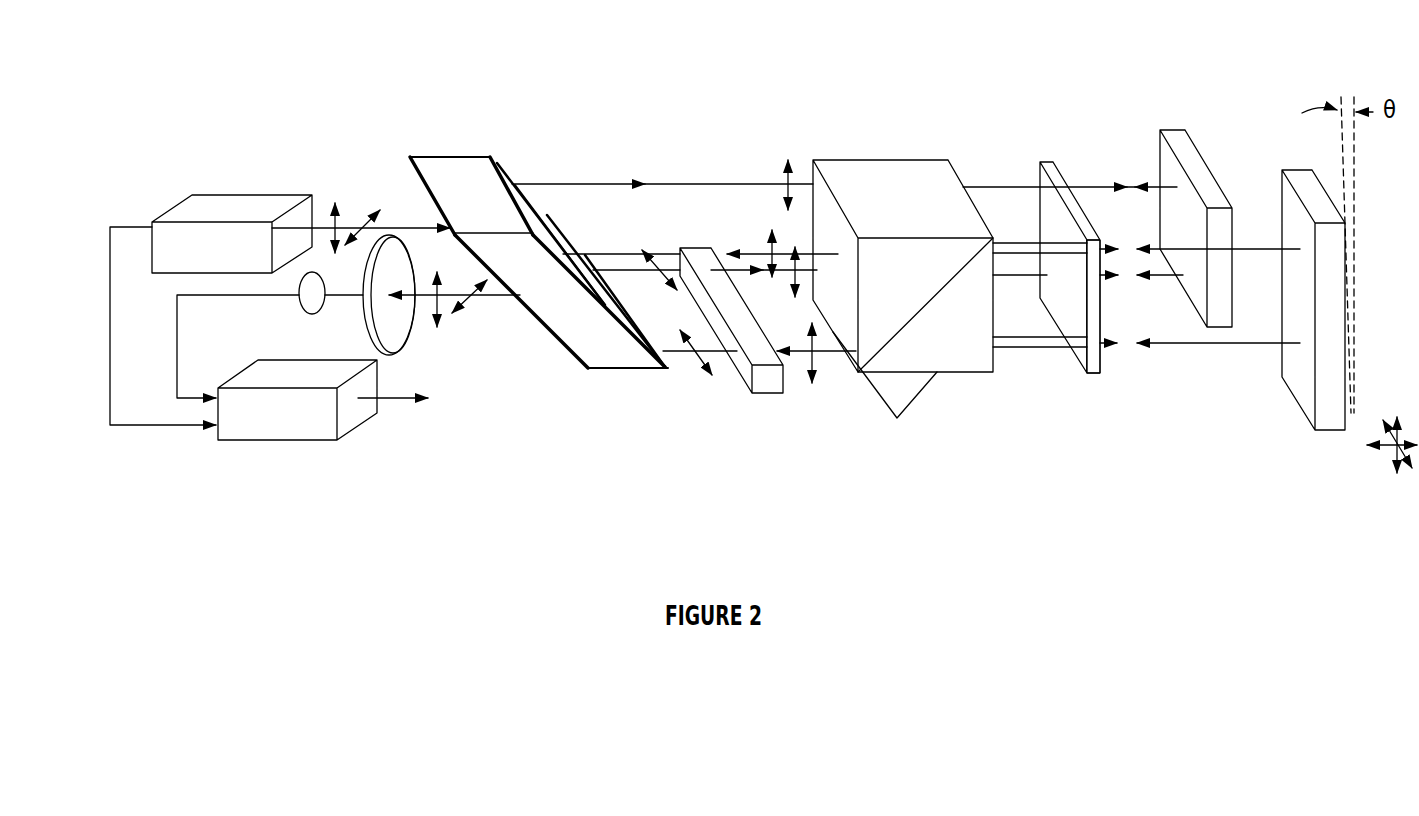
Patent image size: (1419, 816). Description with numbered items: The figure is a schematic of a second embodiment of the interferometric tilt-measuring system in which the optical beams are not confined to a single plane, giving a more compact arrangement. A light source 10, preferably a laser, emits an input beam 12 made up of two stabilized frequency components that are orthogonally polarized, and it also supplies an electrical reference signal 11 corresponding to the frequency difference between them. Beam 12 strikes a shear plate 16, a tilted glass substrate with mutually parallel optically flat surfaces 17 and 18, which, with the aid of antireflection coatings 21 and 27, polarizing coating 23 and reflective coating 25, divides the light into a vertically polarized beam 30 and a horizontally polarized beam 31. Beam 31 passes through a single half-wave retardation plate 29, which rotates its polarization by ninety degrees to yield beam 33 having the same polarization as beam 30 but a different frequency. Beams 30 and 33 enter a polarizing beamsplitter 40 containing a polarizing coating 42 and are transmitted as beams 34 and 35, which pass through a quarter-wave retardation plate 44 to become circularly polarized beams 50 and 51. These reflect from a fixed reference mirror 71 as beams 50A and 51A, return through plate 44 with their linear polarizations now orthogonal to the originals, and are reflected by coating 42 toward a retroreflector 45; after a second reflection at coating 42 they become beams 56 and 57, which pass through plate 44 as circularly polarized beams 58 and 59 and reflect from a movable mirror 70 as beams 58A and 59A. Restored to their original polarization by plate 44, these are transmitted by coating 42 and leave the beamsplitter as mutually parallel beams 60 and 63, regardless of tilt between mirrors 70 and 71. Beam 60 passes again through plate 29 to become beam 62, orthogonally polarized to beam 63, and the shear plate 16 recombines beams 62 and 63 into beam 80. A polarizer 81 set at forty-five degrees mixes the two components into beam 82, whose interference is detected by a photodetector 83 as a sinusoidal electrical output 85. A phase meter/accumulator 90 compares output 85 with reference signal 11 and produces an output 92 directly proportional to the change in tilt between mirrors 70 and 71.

The light source 10 is at (223, 193).
The electrical reference signal 11 is at (118, 227).
The input beam 12 is at (408, 228).
The shear plate 16 is at (443, 155).
The optically flat surface 17 is at (531, 311).
The optically flat surface 18 is at (567, 232).
The antireflection coating 21 is at (420, 178).
The polarizing coating 23 is at (538, 213).
The reflective coating 25 is at (570, 350).
The antireflection coating 27 is at (627, 310).
The half-wave retardation plate 29 is at (768, 395).
The vertically polarized beam 30 is at (542, 180).
The horizontally polarized beam 31 is at (641, 268).
The resultant beam 33 is at (748, 271).
The transmitted beam 34 is at (1018, 188).
The transmitted beam 35 is at (1023, 276).
The polarizing beamsplitter 40 is at (853, 160).
The polarizing coating 42 is at (938, 290).
The quarter-wave retardation plate 44 is at (1072, 186).
The retroreflector 45 is at (903, 373).
The circularly polarized beam 50 is at (1117, 187).
The reflected beam 50A is at (1145, 186).
The circularly polarized beam 51 is at (1110, 274).
The reflected beam 51A is at (1147, 275).
The reflected beam 56 is at (1007, 338).
The reflected beam 57 is at (1008, 243).
The circularly polarized beam 58 is at (1113, 347).
The reflected beam 58A is at (1145, 345).
The circularly polarized beam 59 is at (1093, 237).
The reflected beam 59A is at (1140, 252).
The output beam 60 is at (830, 353).
The resultant beam 62 is at (718, 358).
The output beam 63 is at (752, 250).
The movable mirror 70 is at (1290, 378).
The fixed reference mirror 71 is at (1172, 128).
The combined beam 80 is at (497, 300).
The polarizer 81 is at (395, 352).
The mixed beam 82 is at (350, 296).
The photodetector 83 is at (302, 312).
The sinusoidal electrical output 85 is at (177, 365).
The phase meter/accumulator 90 is at (250, 440).
The output 92 is at (370, 400).